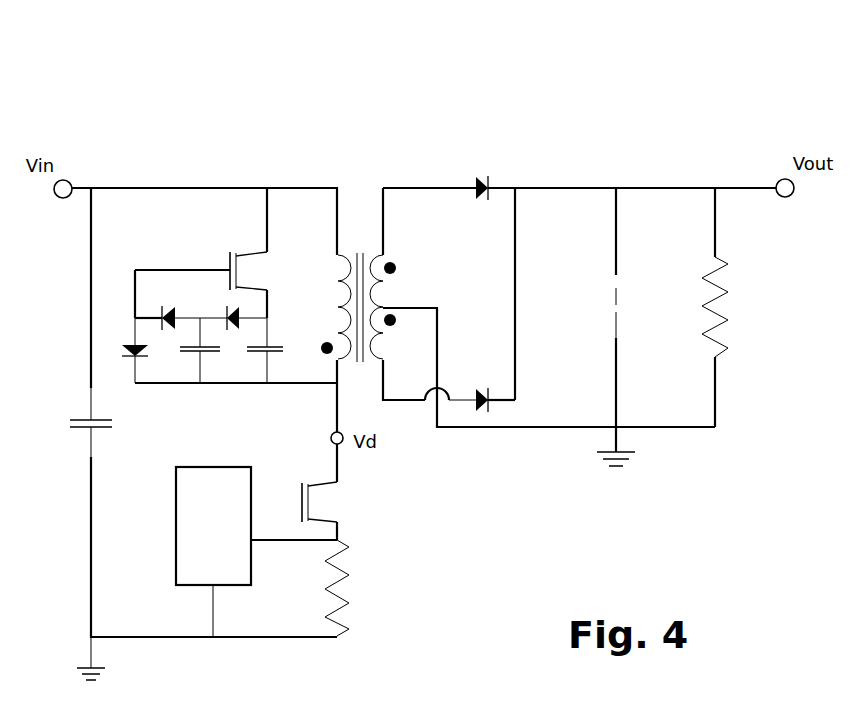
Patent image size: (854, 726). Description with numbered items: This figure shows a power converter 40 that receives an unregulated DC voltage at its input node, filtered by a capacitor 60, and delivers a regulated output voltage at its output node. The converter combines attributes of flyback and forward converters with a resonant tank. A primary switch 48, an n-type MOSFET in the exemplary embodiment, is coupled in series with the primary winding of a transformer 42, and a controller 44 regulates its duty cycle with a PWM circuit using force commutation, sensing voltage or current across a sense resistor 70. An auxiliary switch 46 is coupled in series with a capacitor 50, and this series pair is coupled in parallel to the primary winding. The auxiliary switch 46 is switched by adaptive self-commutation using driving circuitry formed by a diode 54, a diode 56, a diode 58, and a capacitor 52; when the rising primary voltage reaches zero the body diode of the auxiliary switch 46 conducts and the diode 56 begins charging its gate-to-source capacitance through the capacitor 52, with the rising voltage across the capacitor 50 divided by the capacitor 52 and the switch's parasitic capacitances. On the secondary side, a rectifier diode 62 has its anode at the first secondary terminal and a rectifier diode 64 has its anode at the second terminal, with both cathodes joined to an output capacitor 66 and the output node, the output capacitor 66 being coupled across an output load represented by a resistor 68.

The power converter 40 is at (690, 133).
The transformer 42 is at (357, 238).
The controller 44 is at (233, 467).
The auxiliary switch 46 is at (257, 268).
The primary switch 48 is at (332, 505).
The capacitor 50 is at (271, 357).
The capacitor 52 is at (205, 357).
The diode 54 is at (232, 305).
The diode 56 is at (178, 307).
The diode 58 is at (132, 350).
The capacitor 60 is at (74, 421).
The rectifier diode 62 is at (490, 167).
The rectifier diode 64 is at (486, 385).
The output capacitor 66 is at (627, 303).
The resistor 68 is at (723, 305).
The sense resistor 70 is at (347, 587).